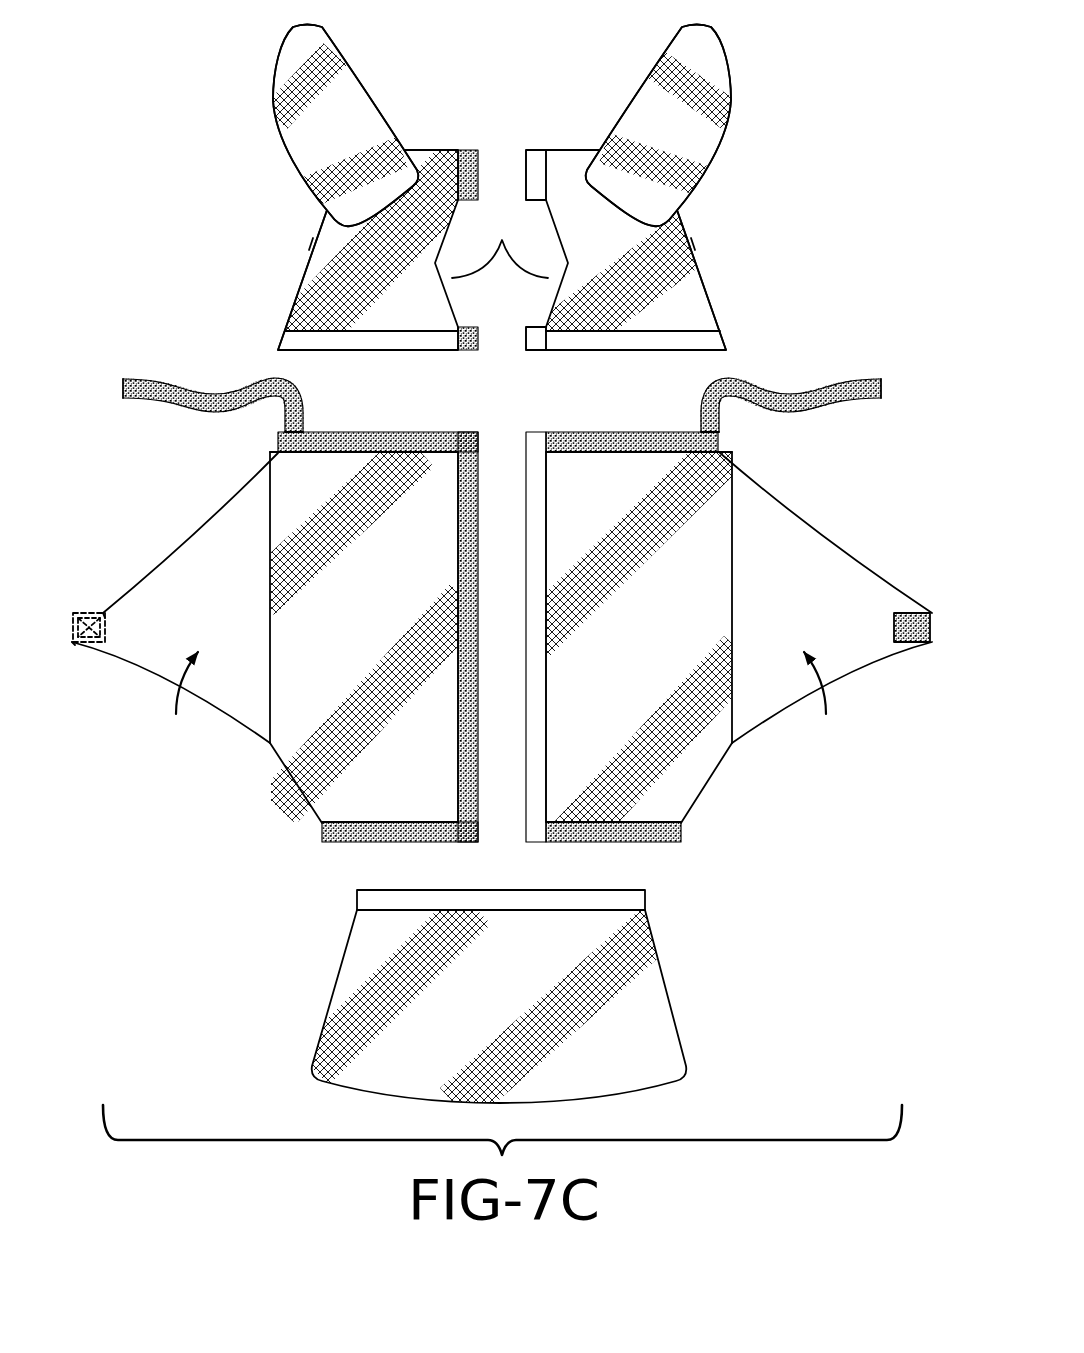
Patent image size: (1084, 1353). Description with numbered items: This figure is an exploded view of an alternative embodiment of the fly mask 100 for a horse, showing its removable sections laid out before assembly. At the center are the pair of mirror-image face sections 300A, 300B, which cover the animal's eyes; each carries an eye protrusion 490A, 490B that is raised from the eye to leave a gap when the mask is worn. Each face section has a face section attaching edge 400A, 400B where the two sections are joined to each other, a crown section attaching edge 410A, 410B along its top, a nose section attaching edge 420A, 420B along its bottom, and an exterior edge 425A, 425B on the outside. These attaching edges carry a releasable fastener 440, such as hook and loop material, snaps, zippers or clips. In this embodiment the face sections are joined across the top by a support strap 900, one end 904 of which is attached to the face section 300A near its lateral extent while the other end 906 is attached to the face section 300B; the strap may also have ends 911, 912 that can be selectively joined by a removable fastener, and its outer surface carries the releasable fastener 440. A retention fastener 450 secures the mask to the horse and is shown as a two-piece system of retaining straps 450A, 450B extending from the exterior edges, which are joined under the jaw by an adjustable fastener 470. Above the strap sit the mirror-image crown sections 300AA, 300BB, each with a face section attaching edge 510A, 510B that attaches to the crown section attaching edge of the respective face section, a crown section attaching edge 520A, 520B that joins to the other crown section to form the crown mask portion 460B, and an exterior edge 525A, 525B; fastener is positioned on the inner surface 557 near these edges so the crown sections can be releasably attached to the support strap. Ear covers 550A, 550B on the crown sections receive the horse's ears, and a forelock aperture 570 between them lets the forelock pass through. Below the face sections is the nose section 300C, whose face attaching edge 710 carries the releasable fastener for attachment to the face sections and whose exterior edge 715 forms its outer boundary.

The fly mask 100 is at (780, 499).
The face section 300A is at (287, 477).
The face section 300B is at (717, 483).
The nose section 300C is at (622, 1062).
The crown section 300AA is at (410, 263).
The crown section 300BB is at (594, 263).
The face section attaching edge 400A is at (457, 682).
The face section attaching edge 400B is at (546, 648).
The crown section attaching edge 410A is at (247, 507).
The crown section attaching edge 410B is at (780, 515).
The nose section attaching edge 420A is at (383, 823).
The nose section attaching edge 420B is at (600, 910).
The exterior edge 425A is at (140, 575).
The exterior edge 425B is at (837, 558).
The releasable fastener 440 is at (526, 152).
The fastener 450 is at (496, 703).
The retaining strap 450A is at (127, 637).
The retaining strap 450B is at (877, 637).
The crown mask portion 460B is at (690, 216).
The fastener 470 is at (86, 612).
The eye protrusion 490A is at (345, 522).
The eye protrusion 490B is at (665, 522).
The face section attaching edge 510A is at (333, 331).
The face section attaching edge 510B is at (671, 331).
The crown section attaching edge 520A is at (440, 148).
The crown section attaching edge 520B is at (562, 160).
The exterior edge 525A is at (414, 143).
The exterior edge 525B is at (593, 148).
The ear cover 550A is at (320, 140).
The ear cover 550B is at (684, 140).
The inner surface 557 is at (313, 238).
The forelock aperture 570 is at (500, 243).
The face attaching edge 710 is at (530, 910).
The exterior edge 715 is at (326, 1010).
The support strap 900 is at (163, 380).
The end of support strap 904 is at (287, 440).
The end of support strap 906 is at (717, 447).
The end of support strap 911 is at (118, 384).
The end of support strap 912 is at (882, 384).